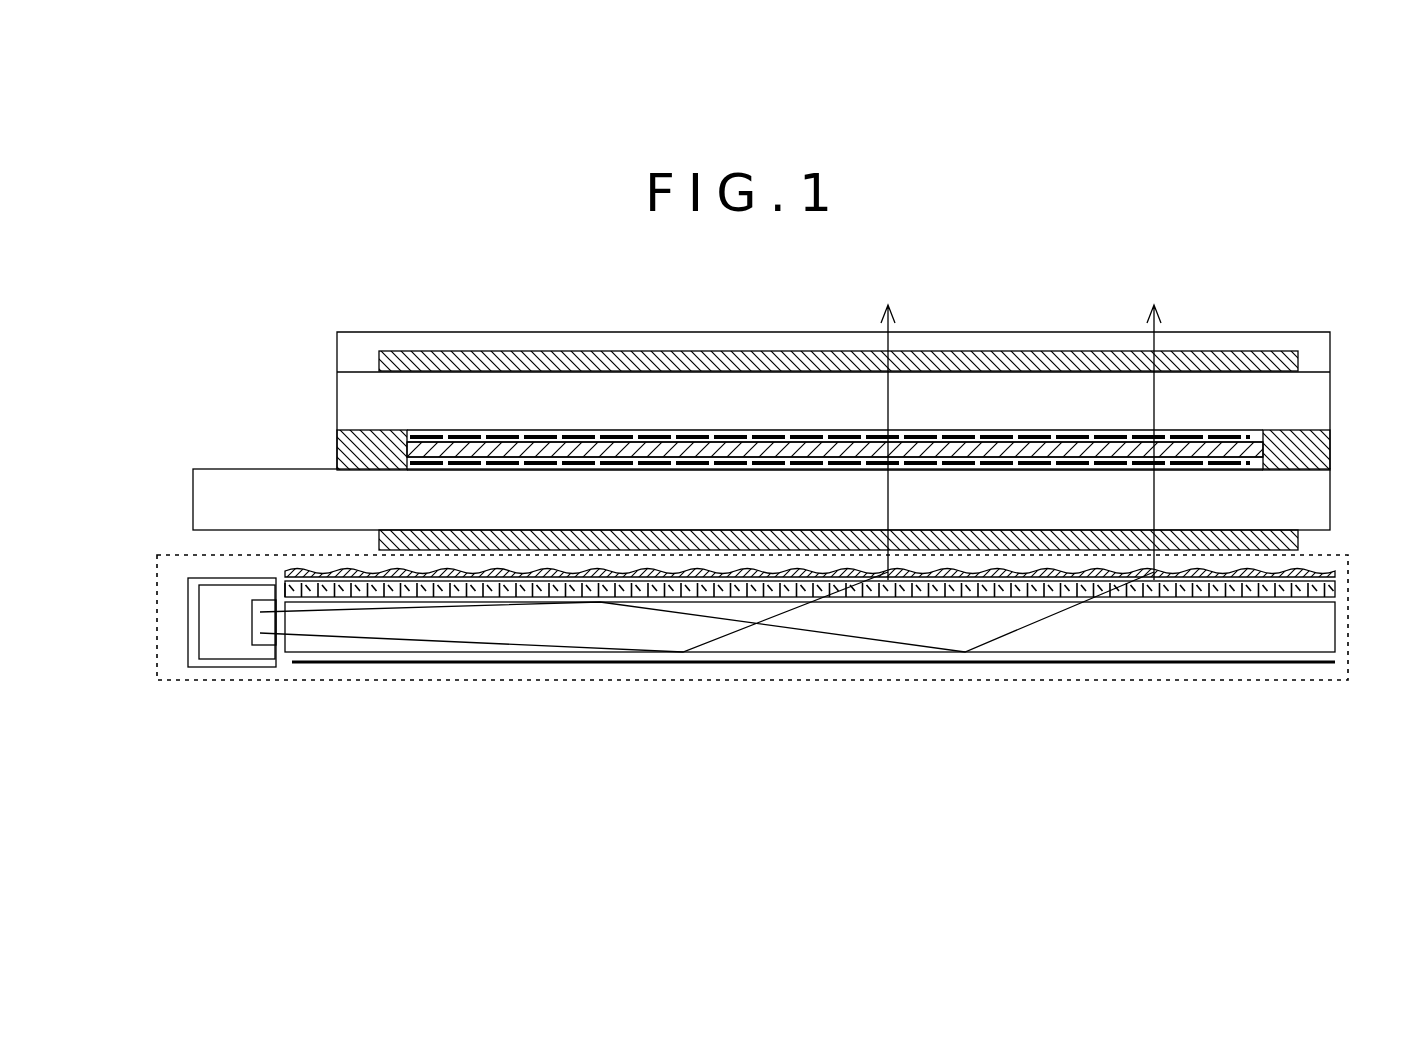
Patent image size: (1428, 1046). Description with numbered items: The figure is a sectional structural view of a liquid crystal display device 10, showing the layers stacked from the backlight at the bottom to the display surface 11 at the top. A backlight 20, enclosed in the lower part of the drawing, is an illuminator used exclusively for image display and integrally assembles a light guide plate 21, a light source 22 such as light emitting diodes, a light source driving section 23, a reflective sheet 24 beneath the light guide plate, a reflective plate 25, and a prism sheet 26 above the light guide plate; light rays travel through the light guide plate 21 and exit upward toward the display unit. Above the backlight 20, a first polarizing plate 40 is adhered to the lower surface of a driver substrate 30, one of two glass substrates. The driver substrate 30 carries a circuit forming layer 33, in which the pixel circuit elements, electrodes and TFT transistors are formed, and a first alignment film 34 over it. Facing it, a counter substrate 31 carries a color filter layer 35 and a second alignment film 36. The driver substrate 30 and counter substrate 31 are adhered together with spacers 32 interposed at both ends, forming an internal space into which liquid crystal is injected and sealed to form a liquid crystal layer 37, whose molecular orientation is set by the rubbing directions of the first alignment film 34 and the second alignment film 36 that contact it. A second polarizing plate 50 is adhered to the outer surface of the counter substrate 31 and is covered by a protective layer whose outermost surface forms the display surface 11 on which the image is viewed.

The liquid crystal display device 10 is at (238, 258).
The display surface 11 is at (1247, 332).
The backlight 20 is at (485, 680).
The light guide plate 21 is at (1033, 633).
The light source 22 is at (266, 640).
The light source driving section 23 is at (218, 637).
The reflective sheet 24 is at (810, 662).
The reflective plate 25 is at (188, 622).
The prism sheet 26 is at (312, 572).
The driver substrate 30 is at (200, 496).
The counter substrate 31 is at (337, 398).
The spacers 32 is at (340, 448).
The circuit forming layer 33 is at (1233, 457).
The first alignment film 34 is at (1212, 460).
The color filter layer 35 is at (1237, 437).
The second alignment film 36 is at (1217, 440).
The liquid crystal layer 37 is at (507, 445).
The first polarizing plate 40 is at (1200, 545).
The second polarizing plate 50 is at (757, 360).